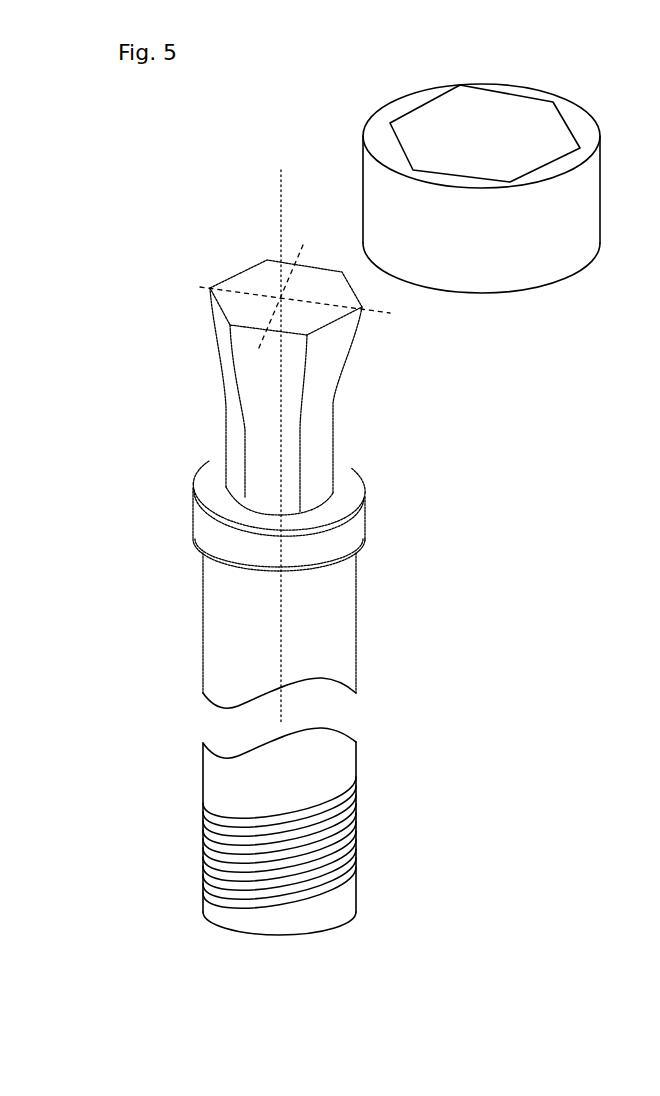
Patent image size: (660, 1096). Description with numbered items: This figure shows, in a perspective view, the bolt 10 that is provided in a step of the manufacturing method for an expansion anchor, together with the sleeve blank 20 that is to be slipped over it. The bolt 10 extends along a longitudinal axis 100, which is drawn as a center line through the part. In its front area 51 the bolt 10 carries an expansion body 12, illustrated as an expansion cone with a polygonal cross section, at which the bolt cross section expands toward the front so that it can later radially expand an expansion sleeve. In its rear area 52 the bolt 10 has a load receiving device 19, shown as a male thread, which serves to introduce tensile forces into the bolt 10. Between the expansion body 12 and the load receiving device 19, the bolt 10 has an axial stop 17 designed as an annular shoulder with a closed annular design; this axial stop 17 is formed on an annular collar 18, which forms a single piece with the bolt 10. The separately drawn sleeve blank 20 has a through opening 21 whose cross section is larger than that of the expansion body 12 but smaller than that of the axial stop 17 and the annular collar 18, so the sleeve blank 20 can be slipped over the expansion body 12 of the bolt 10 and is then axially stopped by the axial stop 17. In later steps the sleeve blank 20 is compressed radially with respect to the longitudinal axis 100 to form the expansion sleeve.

The bolt 10 is at (334, 636).
The expansion body 12 is at (337, 355).
The axial stop 17 is at (348, 503).
The annular collar 18 is at (348, 535).
The load receiving device 19 is at (336, 835).
The sleeve blank 20 is at (499, 252).
The opening 21 is at (506, 156).
The front area 51 is at (411, 386).
The rear area 52 is at (427, 842).
The longitudinal axis 100 is at (282, 647).